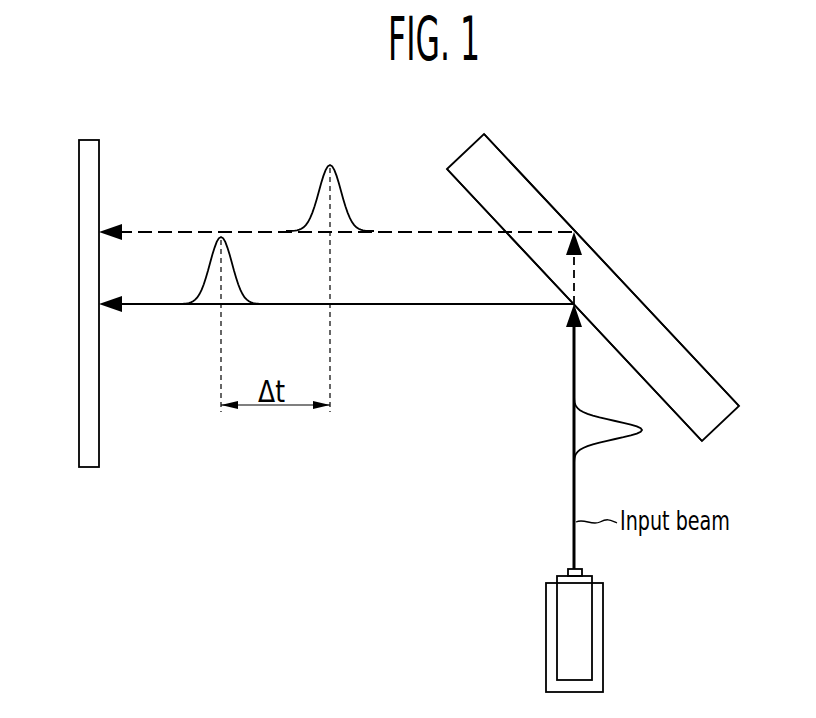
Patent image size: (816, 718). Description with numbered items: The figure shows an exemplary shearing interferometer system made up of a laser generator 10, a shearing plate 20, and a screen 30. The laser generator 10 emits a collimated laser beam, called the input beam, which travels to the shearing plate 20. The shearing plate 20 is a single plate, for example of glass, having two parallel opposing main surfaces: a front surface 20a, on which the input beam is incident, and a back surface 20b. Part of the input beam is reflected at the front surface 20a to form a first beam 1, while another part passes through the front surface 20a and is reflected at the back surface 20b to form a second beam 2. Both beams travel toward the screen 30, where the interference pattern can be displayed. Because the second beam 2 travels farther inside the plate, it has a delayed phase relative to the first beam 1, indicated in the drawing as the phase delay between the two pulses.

The laser generator 10 is at (603, 628).
The shearing plate 20 is at (677, 352).
The front surface 20a is at (462, 188).
The back surface 20b is at (535, 181).
The screen 30 is at (85, 381).
The first beam 1 is at (422, 305).
The second beam 2 is at (403, 230).